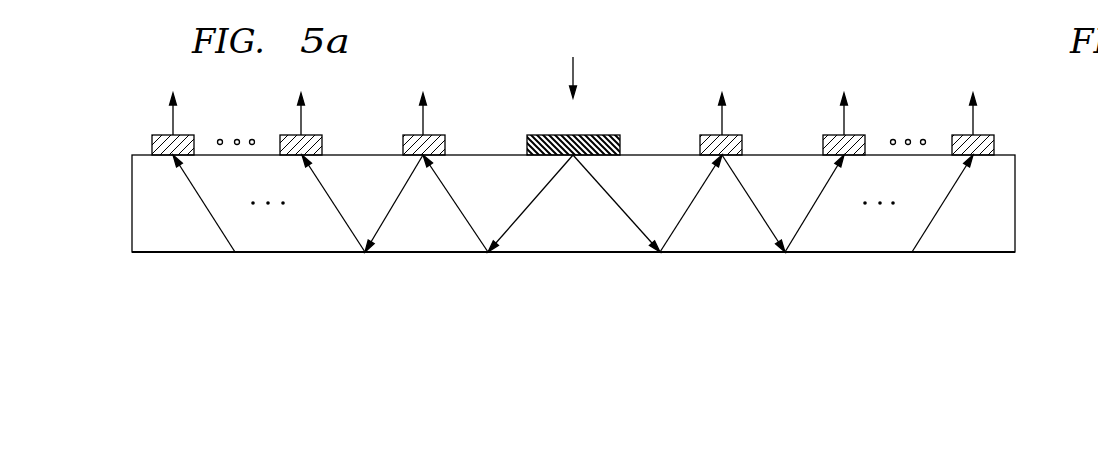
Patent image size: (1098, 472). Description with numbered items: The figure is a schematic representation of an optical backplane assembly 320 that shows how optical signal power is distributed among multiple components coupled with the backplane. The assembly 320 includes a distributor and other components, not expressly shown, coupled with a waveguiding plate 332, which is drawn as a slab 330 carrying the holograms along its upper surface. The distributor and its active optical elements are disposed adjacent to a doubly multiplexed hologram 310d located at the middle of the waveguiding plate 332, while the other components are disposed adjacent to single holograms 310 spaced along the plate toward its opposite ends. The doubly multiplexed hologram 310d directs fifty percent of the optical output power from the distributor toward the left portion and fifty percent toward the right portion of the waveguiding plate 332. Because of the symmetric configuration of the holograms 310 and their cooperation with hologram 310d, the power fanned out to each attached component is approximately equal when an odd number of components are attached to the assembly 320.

The single holograms 310 is at (618, 152).
The doubly multiplexed hologram 310d is at (616, 134).
The optical backplane assembly 320 is at (485, 86).
The substrate slab 330 is at (1016, 203).
The waveguiding plate 332 is at (593, 235).